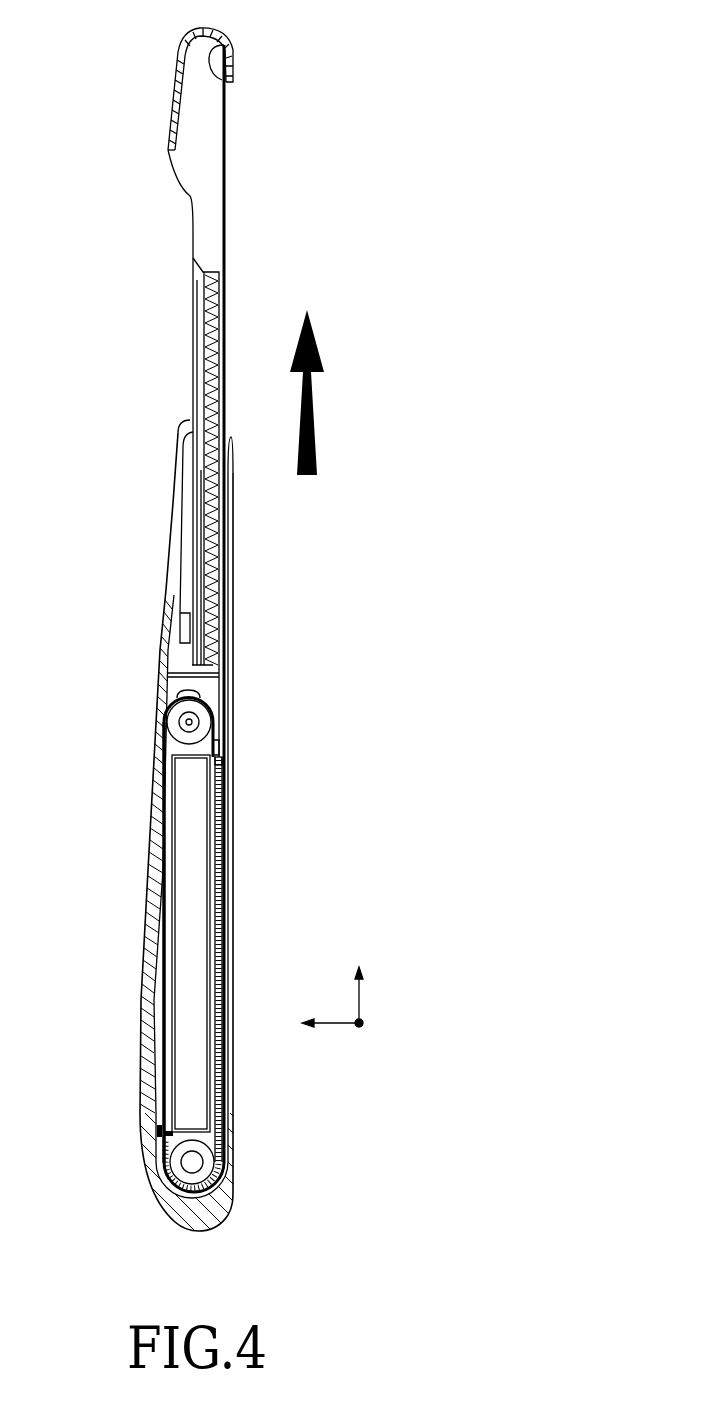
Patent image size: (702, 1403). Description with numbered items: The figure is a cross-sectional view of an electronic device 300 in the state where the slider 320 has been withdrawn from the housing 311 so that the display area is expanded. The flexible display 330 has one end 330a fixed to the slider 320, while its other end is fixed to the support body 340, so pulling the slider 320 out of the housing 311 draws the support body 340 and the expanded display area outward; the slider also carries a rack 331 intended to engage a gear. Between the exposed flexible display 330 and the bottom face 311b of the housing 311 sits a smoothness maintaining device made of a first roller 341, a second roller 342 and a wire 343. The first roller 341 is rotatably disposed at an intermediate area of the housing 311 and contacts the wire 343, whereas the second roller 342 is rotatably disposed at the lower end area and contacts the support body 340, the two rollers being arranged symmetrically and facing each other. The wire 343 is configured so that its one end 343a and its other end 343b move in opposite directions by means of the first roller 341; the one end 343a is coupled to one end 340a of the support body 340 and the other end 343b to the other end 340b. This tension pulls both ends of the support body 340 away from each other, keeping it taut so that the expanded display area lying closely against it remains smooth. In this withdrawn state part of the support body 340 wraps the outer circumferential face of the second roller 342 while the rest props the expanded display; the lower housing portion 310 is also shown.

The electronic device 300 is at (282, 674).
The first housing 310 is at (150, 1218).
The housing 311 is at (212, 1217).
The bottom face of the housing 311b is at (147, 1017).
The slider 320 is at (264, 59).
The flexible display 330 is at (226, 140).
The one end of the flexible display 330a is at (222, 43).
The rack 331 is at (212, 508).
The support body 340 is at (225, 813).
The one end of the support body 340a is at (167, 1145).
The other end of the support body 340b is at (222, 765).
The first roller 341 is at (198, 708).
The second roller 342 is at (195, 1158).
The wire 343 is at (163, 1063).
The one end of the wire 343a is at (163, 1113).
The other end of the wire 343b is at (218, 742).